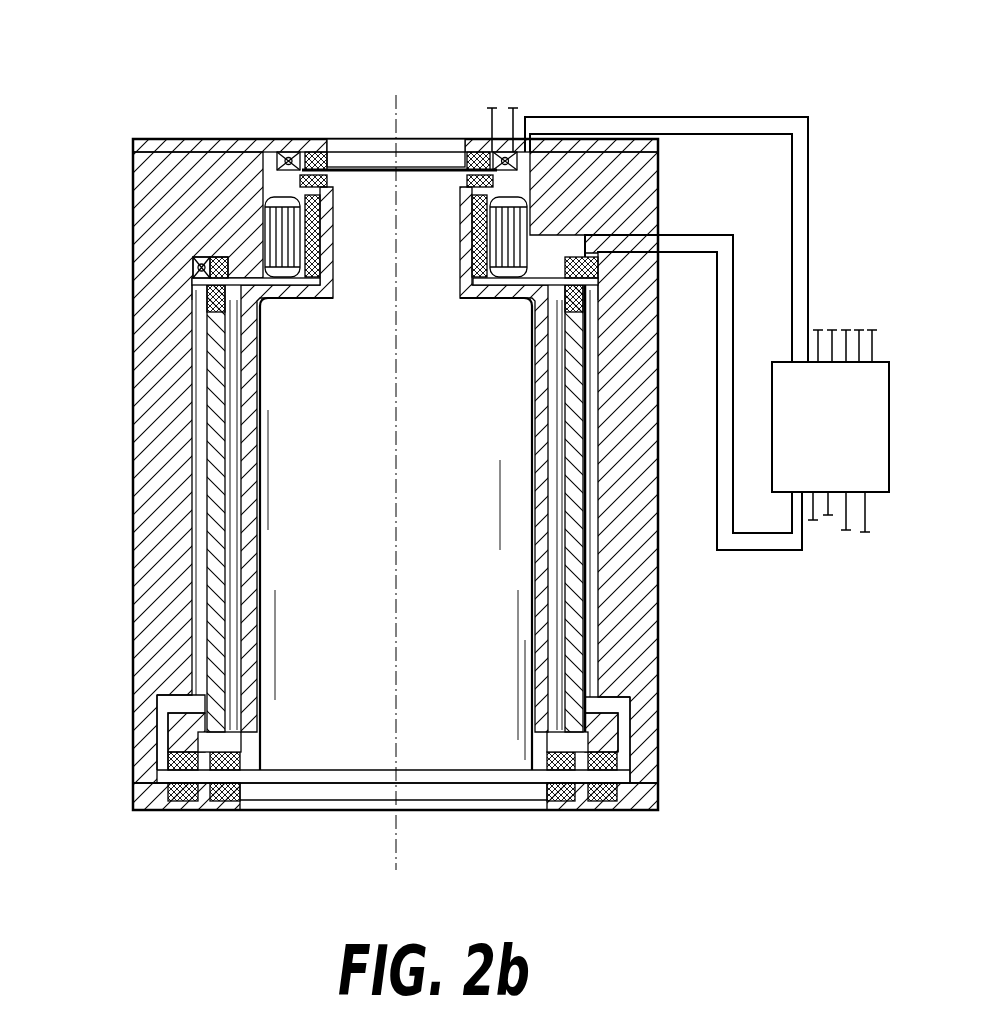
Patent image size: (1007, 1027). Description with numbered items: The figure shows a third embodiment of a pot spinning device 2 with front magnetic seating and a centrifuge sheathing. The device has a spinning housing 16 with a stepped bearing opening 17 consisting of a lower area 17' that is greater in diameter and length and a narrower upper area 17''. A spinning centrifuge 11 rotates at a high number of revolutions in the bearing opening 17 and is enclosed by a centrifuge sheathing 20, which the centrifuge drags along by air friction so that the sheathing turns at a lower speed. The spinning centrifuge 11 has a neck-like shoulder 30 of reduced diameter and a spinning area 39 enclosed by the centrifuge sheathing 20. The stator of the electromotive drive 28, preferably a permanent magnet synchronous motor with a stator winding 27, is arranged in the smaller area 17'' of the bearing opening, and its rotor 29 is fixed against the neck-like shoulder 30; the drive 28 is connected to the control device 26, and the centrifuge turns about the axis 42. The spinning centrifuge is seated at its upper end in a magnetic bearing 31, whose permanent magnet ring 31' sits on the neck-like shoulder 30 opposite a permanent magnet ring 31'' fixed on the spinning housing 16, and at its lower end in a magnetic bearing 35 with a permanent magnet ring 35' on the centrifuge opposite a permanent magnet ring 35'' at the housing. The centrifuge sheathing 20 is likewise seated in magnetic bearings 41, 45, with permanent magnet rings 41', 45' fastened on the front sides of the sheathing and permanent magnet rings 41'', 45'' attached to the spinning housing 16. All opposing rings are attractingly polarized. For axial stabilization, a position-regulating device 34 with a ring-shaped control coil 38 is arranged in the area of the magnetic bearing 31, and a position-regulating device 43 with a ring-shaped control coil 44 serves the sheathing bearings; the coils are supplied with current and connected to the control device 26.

The pot spinning device 2 is at (201, 861).
The spinning centrifuge 11 is at (248, 521).
The spinning housing 16 is at (640, 205).
The bearing opening 17 is at (440, 810).
The lower area of the bearing opening 17' is at (466, 557).
The upper area of the bearing opening 17'' is at (416, 241).
The centrifuge sheathing 20 is at (217, 598).
The control device 26 is at (843, 435).
The coil 27 is at (500, 230).
The electric motor drive 28 is at (483, 294).
The rotor 29 is at (478, 270).
The neck-like shoulder 30 is at (325, 232).
The magnetic bearing 31 is at (399, 90).
The permanent magnet ring 31' is at (268, 138).
The permanent magnet ring 31'' is at (471, 125).
The axial position-regulating device 34 is at (274, 135).
The magnetic bearing 35 is at (395, 842).
The permanent magnet ring 35' is at (197, 792).
The permanent magnet ring 35'' is at (399, 802).
The ring-shaped control coil 38 is at (495, 148).
The spinning area 39 is at (443, 694).
The magnetic bearing 41 is at (125, 283).
The permanent magnet ring 41' is at (644, 308).
The permanent magnet ring 41'' is at (640, 214).
The axis 42 is at (404, 128).
The position-regulating device 43 is at (188, 253).
The ring-shaped control coil 44 is at (204, 271).
The magnetic bearing 45 is at (365, 788).
The permanent magnet ring 45' is at (653, 759).
The permanent magnet ring 45'' is at (655, 798).